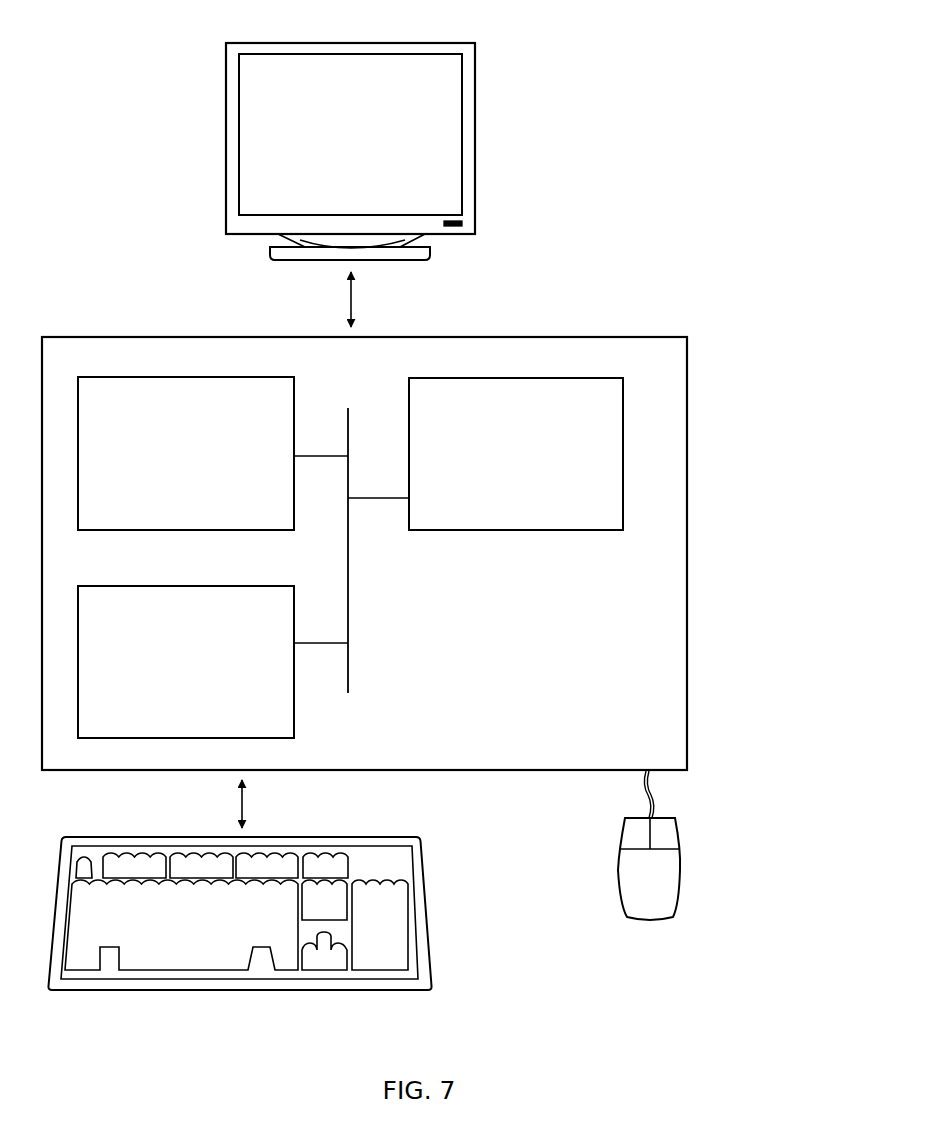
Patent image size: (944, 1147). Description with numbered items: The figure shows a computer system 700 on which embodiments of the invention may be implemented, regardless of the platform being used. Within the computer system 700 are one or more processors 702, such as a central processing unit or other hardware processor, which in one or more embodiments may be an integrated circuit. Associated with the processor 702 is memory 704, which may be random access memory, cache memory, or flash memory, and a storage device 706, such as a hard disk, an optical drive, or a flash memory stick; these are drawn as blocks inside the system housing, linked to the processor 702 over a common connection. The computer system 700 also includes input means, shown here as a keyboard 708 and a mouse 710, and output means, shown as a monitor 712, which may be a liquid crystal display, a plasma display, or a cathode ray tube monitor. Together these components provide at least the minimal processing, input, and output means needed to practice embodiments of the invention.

The computer system 700 is at (459, 525).
The processor 702 is at (498, 451).
The memory 704 is at (168, 451).
The storage device 706 is at (168, 661).
The keyboard 708 is at (165, 923).
The mouse 710 is at (683, 922).
The monitor 712 is at (332, 145).